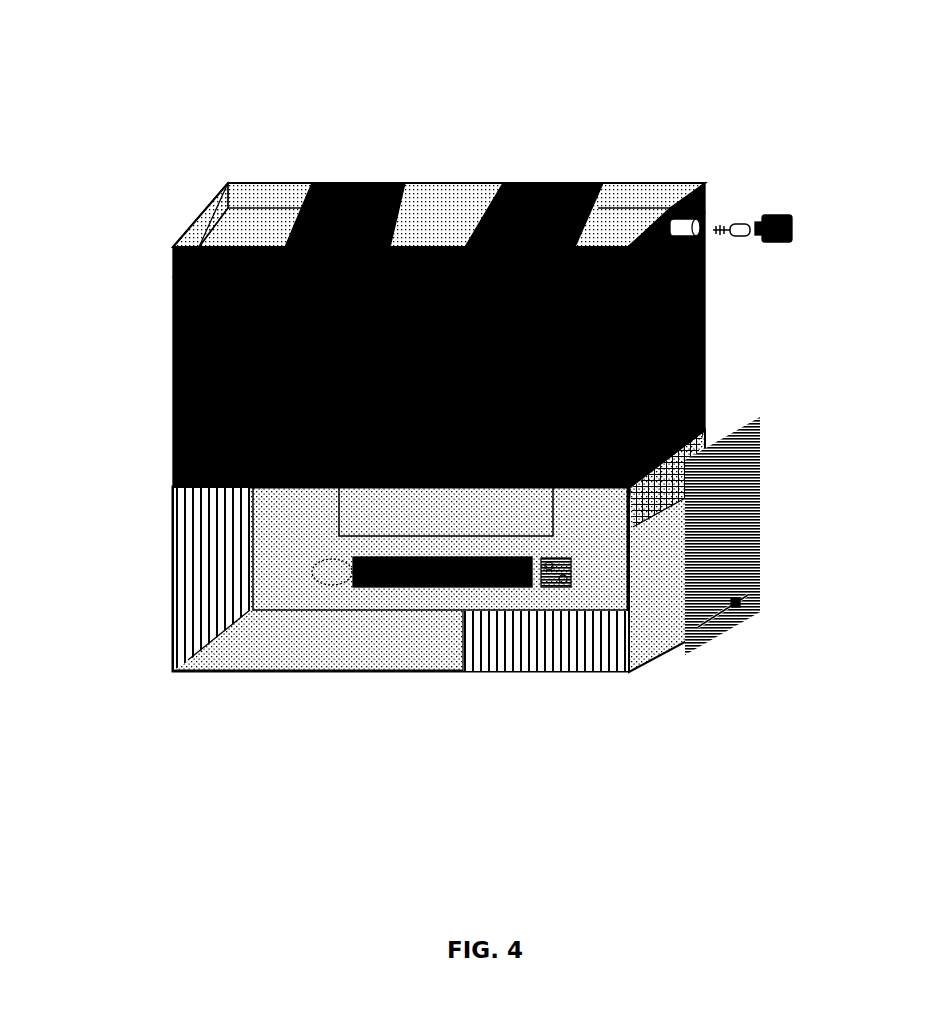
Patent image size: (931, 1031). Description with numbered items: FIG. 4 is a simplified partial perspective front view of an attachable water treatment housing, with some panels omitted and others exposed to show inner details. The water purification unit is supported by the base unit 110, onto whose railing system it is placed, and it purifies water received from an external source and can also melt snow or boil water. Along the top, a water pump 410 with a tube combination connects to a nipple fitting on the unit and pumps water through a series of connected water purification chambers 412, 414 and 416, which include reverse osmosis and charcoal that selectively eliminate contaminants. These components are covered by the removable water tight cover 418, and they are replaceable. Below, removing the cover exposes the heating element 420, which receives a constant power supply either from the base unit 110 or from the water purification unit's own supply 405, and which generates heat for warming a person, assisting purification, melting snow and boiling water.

The water tight cover 418 is at (166, 249).
The water purification chamber 416 is at (274, 192).
The water purification chamber 414 is at (455, 192).
The water purification chamber 412 is at (626, 192).
The water pump 410 is at (835, 345).
The base unit 110 is at (286, 606).
The heating element 420 is at (517, 638).
The power supply of water purification unit 405 is at (667, 606).